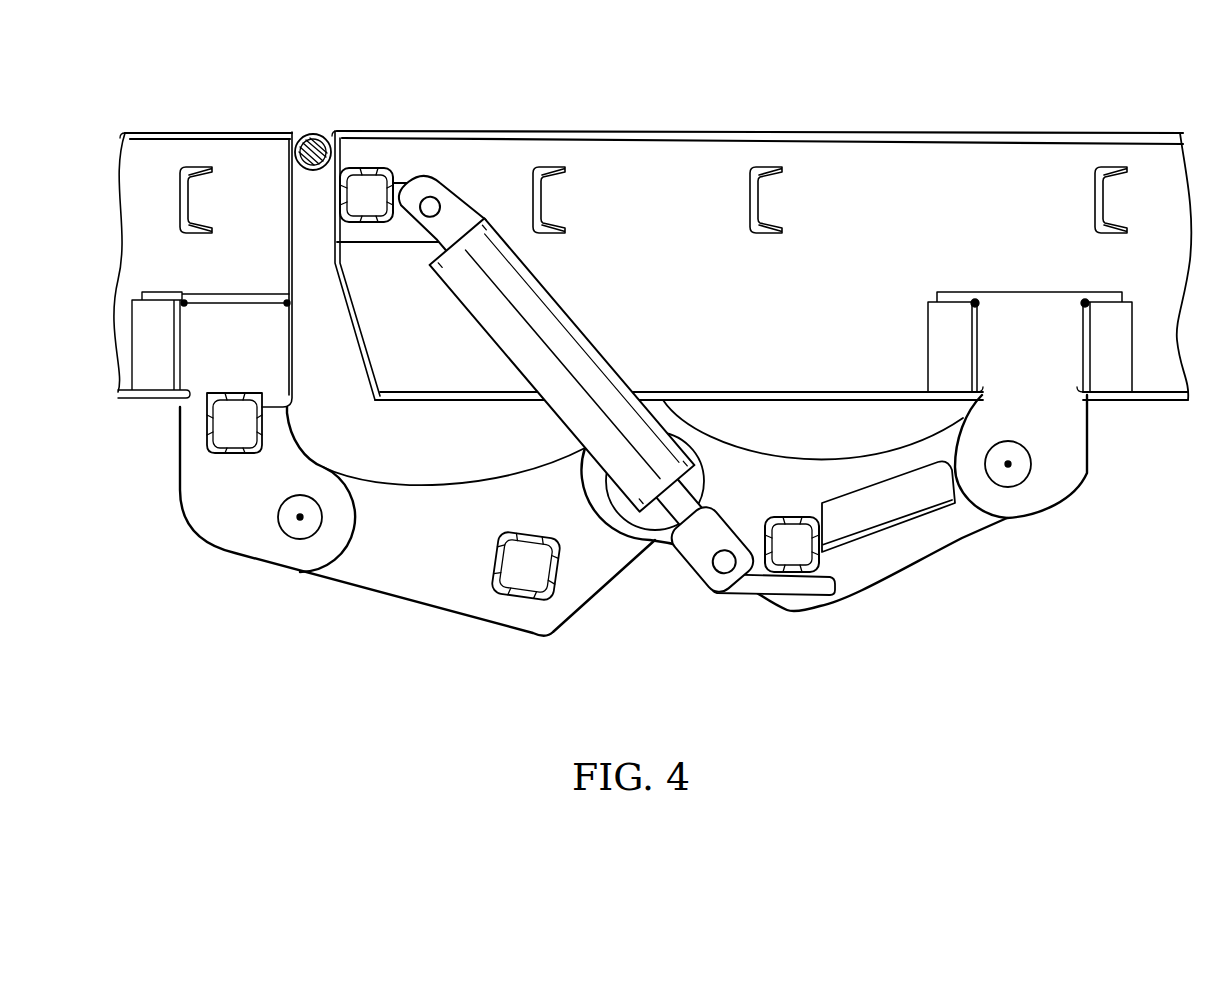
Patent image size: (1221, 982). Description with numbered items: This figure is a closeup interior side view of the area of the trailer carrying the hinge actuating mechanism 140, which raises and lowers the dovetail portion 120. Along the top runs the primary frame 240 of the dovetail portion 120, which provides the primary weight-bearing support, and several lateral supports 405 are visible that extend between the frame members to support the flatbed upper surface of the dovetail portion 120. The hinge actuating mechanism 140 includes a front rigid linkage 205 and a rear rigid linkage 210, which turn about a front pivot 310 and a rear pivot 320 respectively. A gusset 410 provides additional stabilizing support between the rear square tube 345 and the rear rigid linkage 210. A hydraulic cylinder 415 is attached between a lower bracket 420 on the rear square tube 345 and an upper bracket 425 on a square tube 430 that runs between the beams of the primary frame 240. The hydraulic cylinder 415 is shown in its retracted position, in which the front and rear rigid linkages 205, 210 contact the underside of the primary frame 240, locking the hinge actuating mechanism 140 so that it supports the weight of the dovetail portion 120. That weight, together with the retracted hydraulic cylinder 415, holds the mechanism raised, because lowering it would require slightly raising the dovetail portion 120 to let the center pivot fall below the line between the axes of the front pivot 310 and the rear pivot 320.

The dovetail portion 120 is at (660, 134).
The primary frame 240 is at (866, 165).
The lateral supports 405 is at (750, 200).
The square tube 430 is at (372, 168).
The upper bracket 425 is at (398, 243).
The hydraulic cylinder 415 is at (595, 300).
The rear square tube 345 is at (790, 517).
The gusset 410 is at (870, 508).
The front pivot 310 is at (298, 519).
The rear pivot 320 is at (1010, 466).
The front rigid linkage 205 is at (433, 580).
The lower bracket 420 is at (745, 595).
The rear rigid linkage 210 is at (917, 552).
The hinge actuating mechanism 140 is at (609, 655).